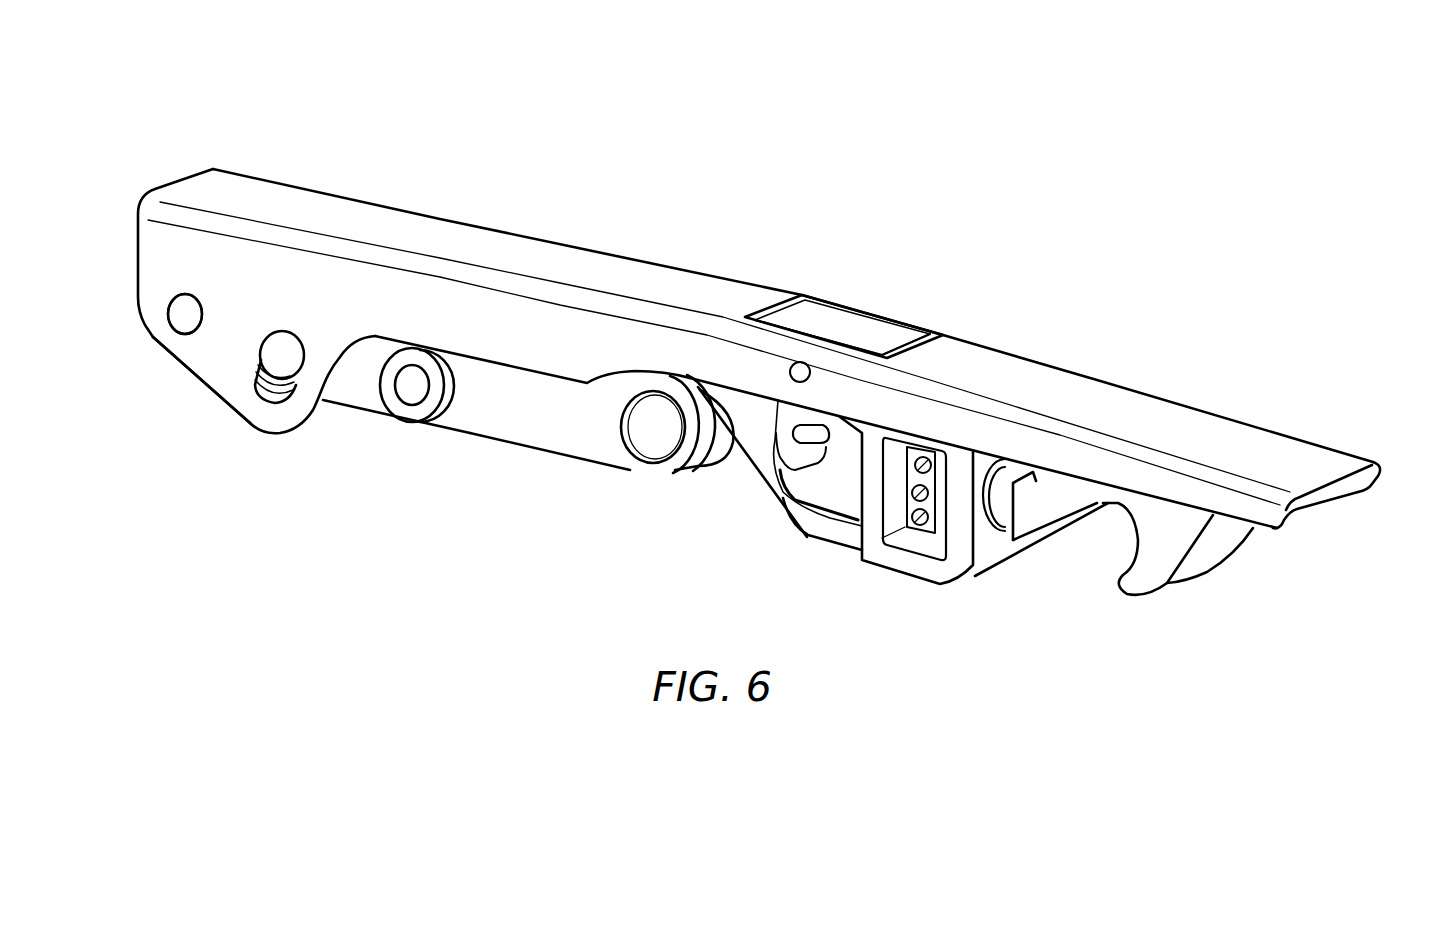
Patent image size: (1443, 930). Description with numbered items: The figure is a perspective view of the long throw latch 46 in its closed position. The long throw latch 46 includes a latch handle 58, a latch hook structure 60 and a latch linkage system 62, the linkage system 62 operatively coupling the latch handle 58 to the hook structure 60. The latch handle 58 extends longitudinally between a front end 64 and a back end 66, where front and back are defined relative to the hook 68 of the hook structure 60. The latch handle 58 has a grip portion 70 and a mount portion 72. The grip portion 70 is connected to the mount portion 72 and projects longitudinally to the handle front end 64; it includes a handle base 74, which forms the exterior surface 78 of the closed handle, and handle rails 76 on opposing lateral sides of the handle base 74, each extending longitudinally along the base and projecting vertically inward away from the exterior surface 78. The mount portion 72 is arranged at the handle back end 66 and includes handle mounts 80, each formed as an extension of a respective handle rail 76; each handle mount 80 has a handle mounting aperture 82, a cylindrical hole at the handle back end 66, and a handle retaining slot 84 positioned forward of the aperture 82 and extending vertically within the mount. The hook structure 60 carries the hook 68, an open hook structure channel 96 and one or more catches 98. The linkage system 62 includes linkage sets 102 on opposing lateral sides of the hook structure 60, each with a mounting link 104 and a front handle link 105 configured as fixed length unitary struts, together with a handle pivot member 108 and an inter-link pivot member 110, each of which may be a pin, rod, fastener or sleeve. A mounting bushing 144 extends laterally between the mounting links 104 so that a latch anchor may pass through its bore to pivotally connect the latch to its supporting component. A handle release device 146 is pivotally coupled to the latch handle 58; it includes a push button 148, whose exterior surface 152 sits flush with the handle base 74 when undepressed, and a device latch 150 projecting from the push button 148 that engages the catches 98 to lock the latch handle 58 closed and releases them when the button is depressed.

The long throw latch 46 is at (962, 108).
The latch handle 58 is at (637, 249).
The latch hook structure 60 is at (817, 553).
The latch linkage system 62 is at (413, 467).
The front end of the latch handle 64 is at (1360, 460).
The back end of the latch handle 66 is at (177, 183).
The hook 68 is at (1195, 563).
The grip portion 70 is at (522, 220).
The mount portion 72 is at (200, 397).
The handle base 74 is at (428, 238).
The handle rails 76 is at (1368, 490).
The exterior surface 78 is at (337, 213).
The handle mounts 80 is at (180, 367).
The handle mounting aperture 82 is at (170, 312).
The handle retaining slot 84 is at (262, 402).
The hook structure channel 96 is at (710, 487).
The catches 98 is at (825, 447).
The linkage sets 102 is at (435, 458).
The mounting link 104 is at (536, 450).
The front handle link 105 is at (340, 412).
The handle pivot member 108 is at (180, 317).
The inter-link pivot member 110 is at (410, 393).
The mounting bushing 144 is at (630, 470).
The handle release device 146 is at (867, 314).
The push button 148 is at (829, 320).
The device latch 150 is at (781, 496).
The exterior surface of the push button 152 is at (897, 337).